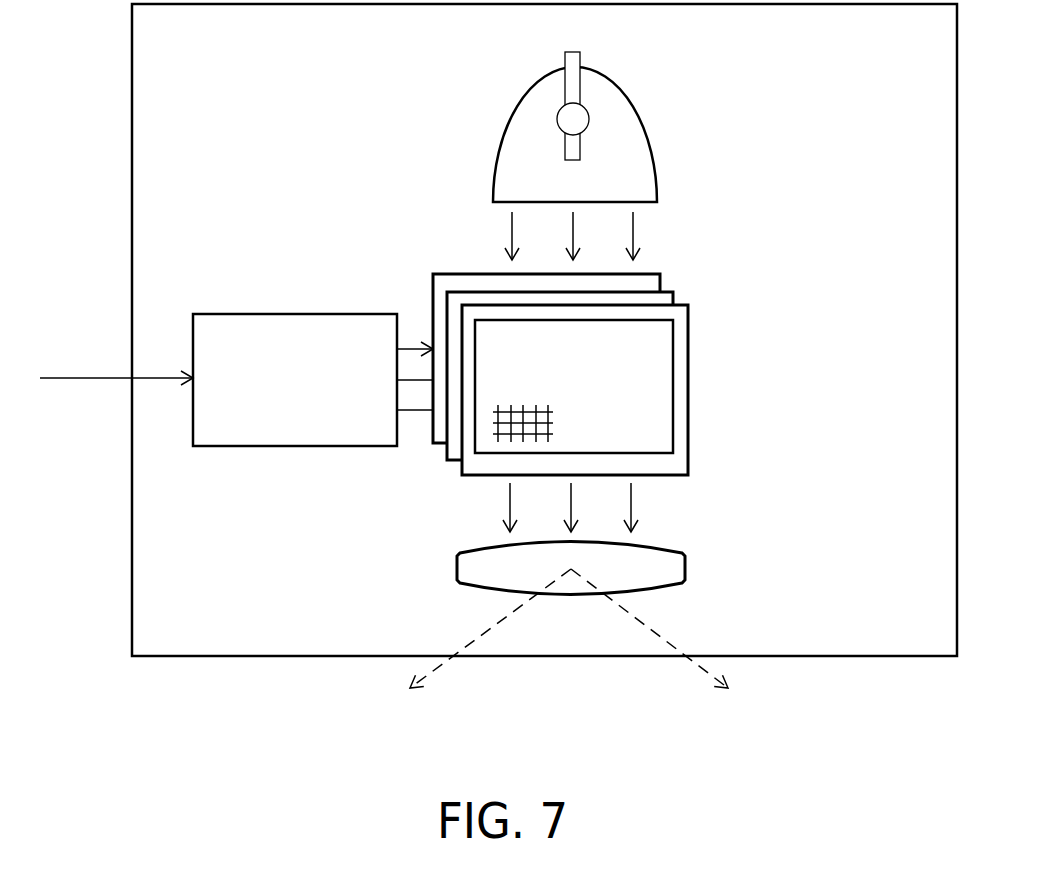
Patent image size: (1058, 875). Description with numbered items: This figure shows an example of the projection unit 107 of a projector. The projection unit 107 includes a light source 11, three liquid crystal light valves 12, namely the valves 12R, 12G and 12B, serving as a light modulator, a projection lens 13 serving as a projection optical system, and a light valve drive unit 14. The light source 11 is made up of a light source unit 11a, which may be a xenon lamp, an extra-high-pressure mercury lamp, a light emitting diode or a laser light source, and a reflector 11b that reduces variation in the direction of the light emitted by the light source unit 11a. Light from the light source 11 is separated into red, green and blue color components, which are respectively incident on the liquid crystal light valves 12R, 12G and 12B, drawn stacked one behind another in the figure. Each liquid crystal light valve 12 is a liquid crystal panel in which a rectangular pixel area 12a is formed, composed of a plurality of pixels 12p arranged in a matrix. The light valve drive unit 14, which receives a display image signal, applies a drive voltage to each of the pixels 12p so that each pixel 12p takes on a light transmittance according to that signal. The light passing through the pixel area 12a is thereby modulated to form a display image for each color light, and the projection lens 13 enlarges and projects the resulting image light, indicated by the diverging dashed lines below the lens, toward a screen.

The projection unit 107 is at (132, 65).
The light source 11 is at (536, 114).
The light source unit 11a is at (565, 118).
The reflector 11b is at (632, 105).
The liquid crystal light valve 12 is at (648, 383).
The liquid crystal light valve 12B is at (647, 283).
The liquid crystal light valve 12G is at (655, 298).
The liquid crystal light valve 12R is at (680, 363).
The pixel area 12a is at (648, 418).
The pixel 12p is at (500, 430).
The projection lens 13 is at (472, 567).
The light valve drive unit 14 is at (323, 313).